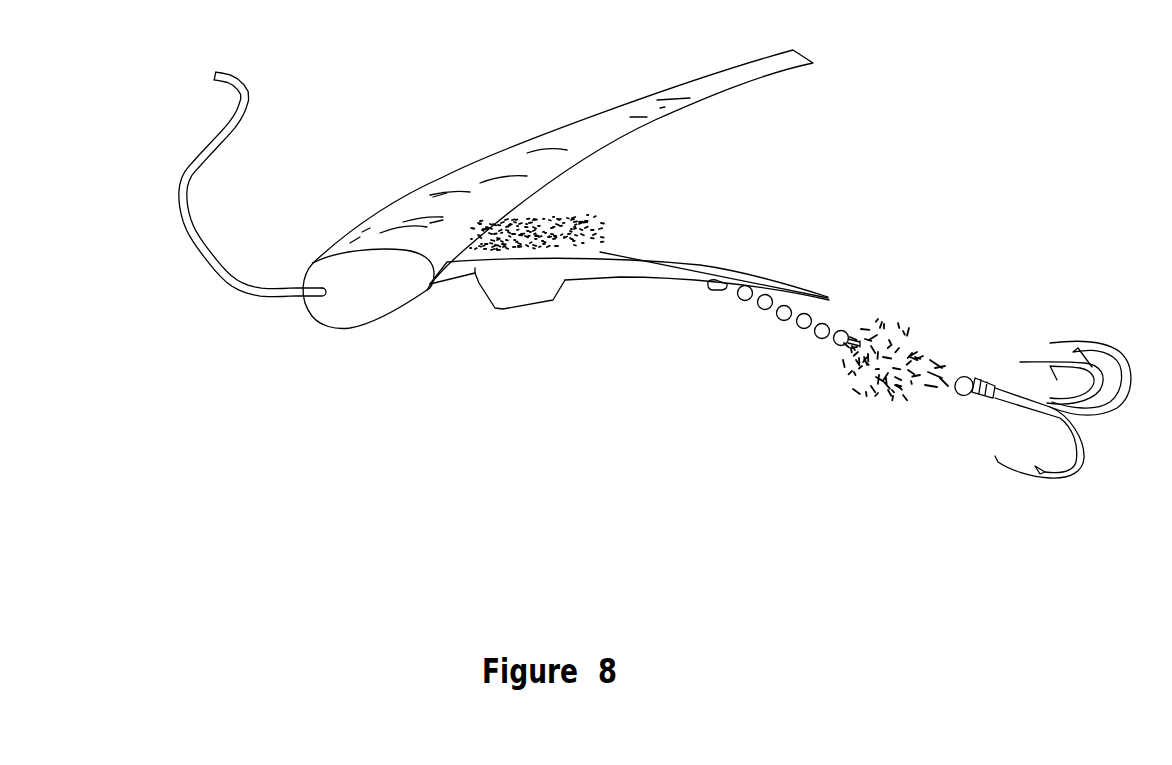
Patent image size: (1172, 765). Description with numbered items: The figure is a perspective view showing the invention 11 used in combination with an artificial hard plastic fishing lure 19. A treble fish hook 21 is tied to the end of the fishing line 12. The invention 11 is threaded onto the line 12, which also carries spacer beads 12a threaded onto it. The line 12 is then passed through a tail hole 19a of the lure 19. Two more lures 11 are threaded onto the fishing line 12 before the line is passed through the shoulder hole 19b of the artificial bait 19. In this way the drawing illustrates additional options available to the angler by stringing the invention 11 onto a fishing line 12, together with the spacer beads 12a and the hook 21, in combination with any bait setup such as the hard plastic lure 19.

The artificial hard plastic fishing lure 19 is at (513, 147).
The tail hole 19a is at (727, 267).
The shoulder hole 19b is at (473, 268).
The invention 11 is at (511, 258).
The spacer beads 12a is at (780, 318).
The line 12 is at (810, 328).
The treble fish hook 21 is at (1030, 482).